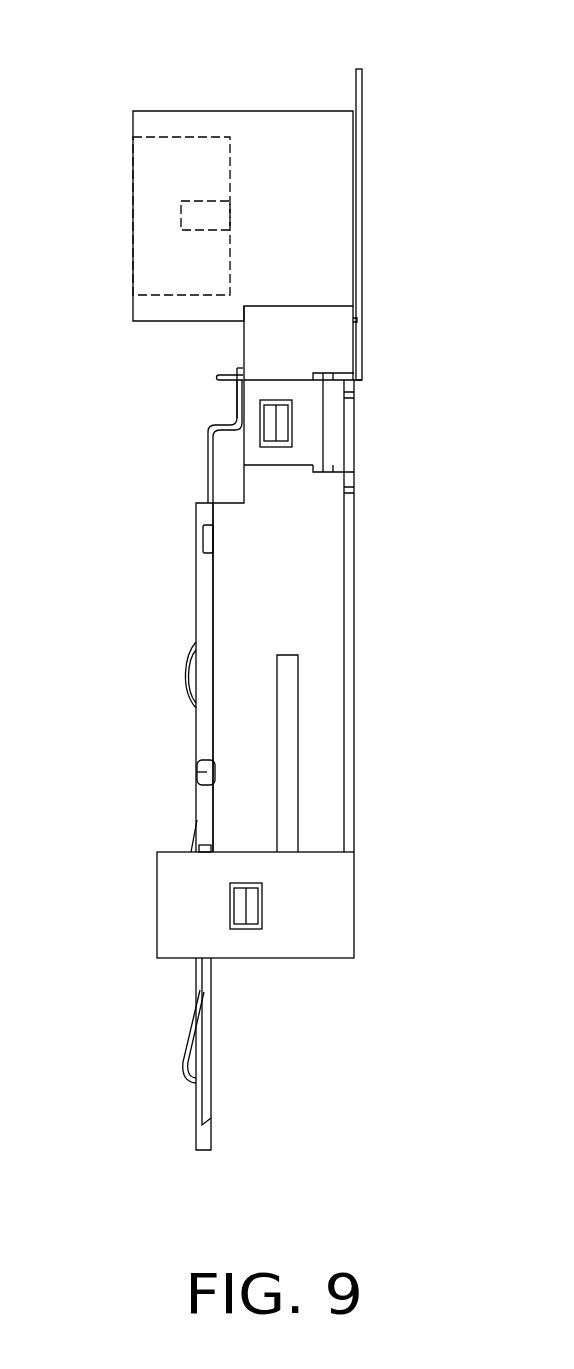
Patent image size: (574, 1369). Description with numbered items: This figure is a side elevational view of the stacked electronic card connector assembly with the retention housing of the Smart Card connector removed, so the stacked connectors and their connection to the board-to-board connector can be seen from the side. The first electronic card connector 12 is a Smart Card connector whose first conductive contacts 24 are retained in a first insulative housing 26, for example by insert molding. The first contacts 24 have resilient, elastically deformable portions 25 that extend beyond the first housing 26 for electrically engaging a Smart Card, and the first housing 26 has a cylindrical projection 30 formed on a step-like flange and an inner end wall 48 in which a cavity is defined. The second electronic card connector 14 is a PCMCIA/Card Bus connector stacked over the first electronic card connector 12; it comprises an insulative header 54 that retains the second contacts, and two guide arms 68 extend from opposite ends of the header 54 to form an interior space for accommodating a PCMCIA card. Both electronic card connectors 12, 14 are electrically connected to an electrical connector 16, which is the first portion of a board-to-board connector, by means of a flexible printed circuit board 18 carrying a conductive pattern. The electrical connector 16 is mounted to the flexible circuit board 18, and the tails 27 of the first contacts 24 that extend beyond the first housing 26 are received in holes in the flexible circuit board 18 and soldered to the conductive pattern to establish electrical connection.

The first electronic card connector 12 is at (185, 630).
The second electronic card connector 14 is at (358, 527).
The electrical connector 16 is at (253, 111).
The flexible printed circuit board 18 is at (360, 90).
The first conductive contacts 24 is at (200, 470).
The resilient portions 25 is at (187, 1062).
The first insulative housing 26 is at (207, 583).
The tails 27 is at (237, 397).
The cylindrical projection 30 is at (197, 773).
The inner end wall 48 is at (205, 1150).
The insulative header 54 is at (302, 424).
The guide arms 68 is at (320, 765).